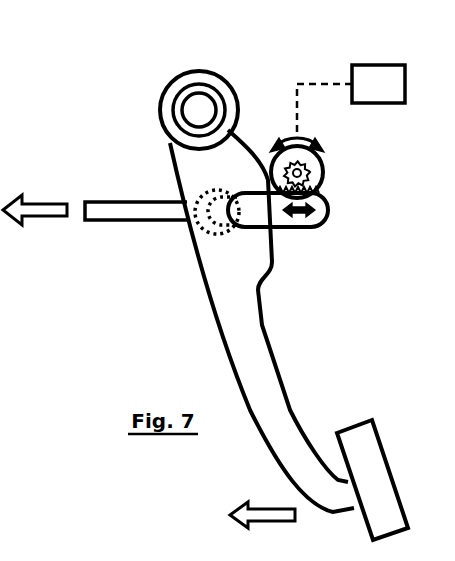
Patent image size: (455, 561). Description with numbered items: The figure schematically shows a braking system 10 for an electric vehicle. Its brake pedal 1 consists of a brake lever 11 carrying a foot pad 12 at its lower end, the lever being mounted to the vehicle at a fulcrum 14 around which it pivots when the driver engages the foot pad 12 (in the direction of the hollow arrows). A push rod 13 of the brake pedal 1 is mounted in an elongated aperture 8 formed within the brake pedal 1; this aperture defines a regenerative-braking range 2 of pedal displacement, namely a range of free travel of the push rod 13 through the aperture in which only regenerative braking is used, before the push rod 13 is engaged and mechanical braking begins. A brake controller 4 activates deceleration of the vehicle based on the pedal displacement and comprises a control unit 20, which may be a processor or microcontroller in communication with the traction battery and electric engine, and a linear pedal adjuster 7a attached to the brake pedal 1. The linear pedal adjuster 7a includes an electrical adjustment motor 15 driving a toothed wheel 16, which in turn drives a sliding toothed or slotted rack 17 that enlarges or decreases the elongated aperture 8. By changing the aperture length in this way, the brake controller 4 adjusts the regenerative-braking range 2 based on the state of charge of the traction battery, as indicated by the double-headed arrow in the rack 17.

The braking system 10 is at (96, 78).
The brake pedal 1 is at (288, 374).
The brake lever 11 is at (275, 330).
The foot pad 12 is at (385, 458).
The fulcrum 14 is at (200, 70).
The push rod 13 is at (142, 221).
The elongated aperture 8 is at (248, 210).
The brake controller 4 is at (281, 98).
The electrical adjustment motor 15 is at (322, 171).
The toothed wheel 16 is at (329, 184).
The sliding toothed and/or slotted rack 17 is at (329, 224).
The linear pedal adjuster 7a is at (352, 212).
The control unit 20 is at (365, 65).
The regenerative-braking range 2 is at (150, 491).